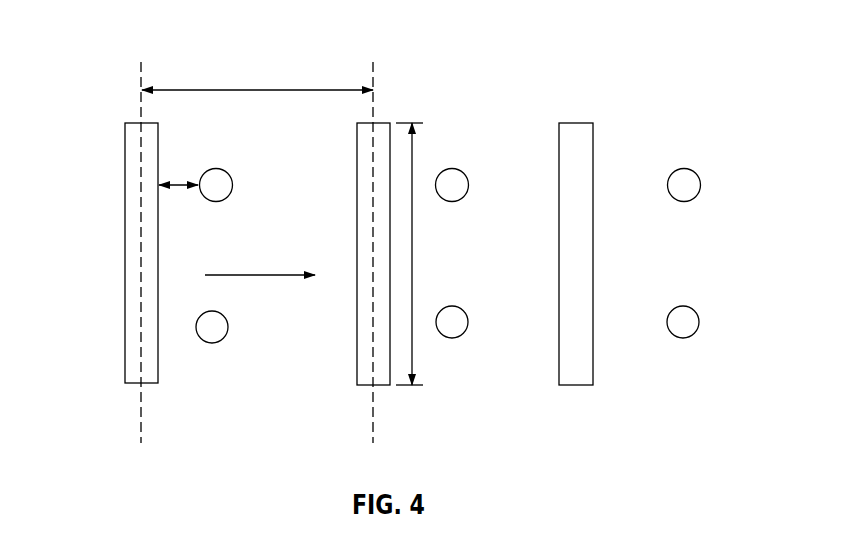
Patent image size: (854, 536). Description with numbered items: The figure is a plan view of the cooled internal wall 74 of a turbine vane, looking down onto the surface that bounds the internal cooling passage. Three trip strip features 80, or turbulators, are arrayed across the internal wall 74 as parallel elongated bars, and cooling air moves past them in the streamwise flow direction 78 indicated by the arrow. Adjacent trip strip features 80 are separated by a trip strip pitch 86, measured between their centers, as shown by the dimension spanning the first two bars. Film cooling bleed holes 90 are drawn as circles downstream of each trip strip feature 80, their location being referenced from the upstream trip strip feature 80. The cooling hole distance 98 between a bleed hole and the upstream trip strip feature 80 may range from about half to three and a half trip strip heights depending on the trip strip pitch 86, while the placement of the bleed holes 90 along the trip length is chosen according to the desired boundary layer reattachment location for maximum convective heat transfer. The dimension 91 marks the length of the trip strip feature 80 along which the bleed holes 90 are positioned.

The internal wall 74 is at (74, 287).
The flow direction 78 is at (262, 275).
The trip strip feature 80 is at (130, 152).
The trip strip pitch 86 is at (288, 90).
The film cooling bleed hole 90 is at (214, 343).
The blade length 91 is at (412, 160).
The cooling hole distance 98 is at (178, 184).